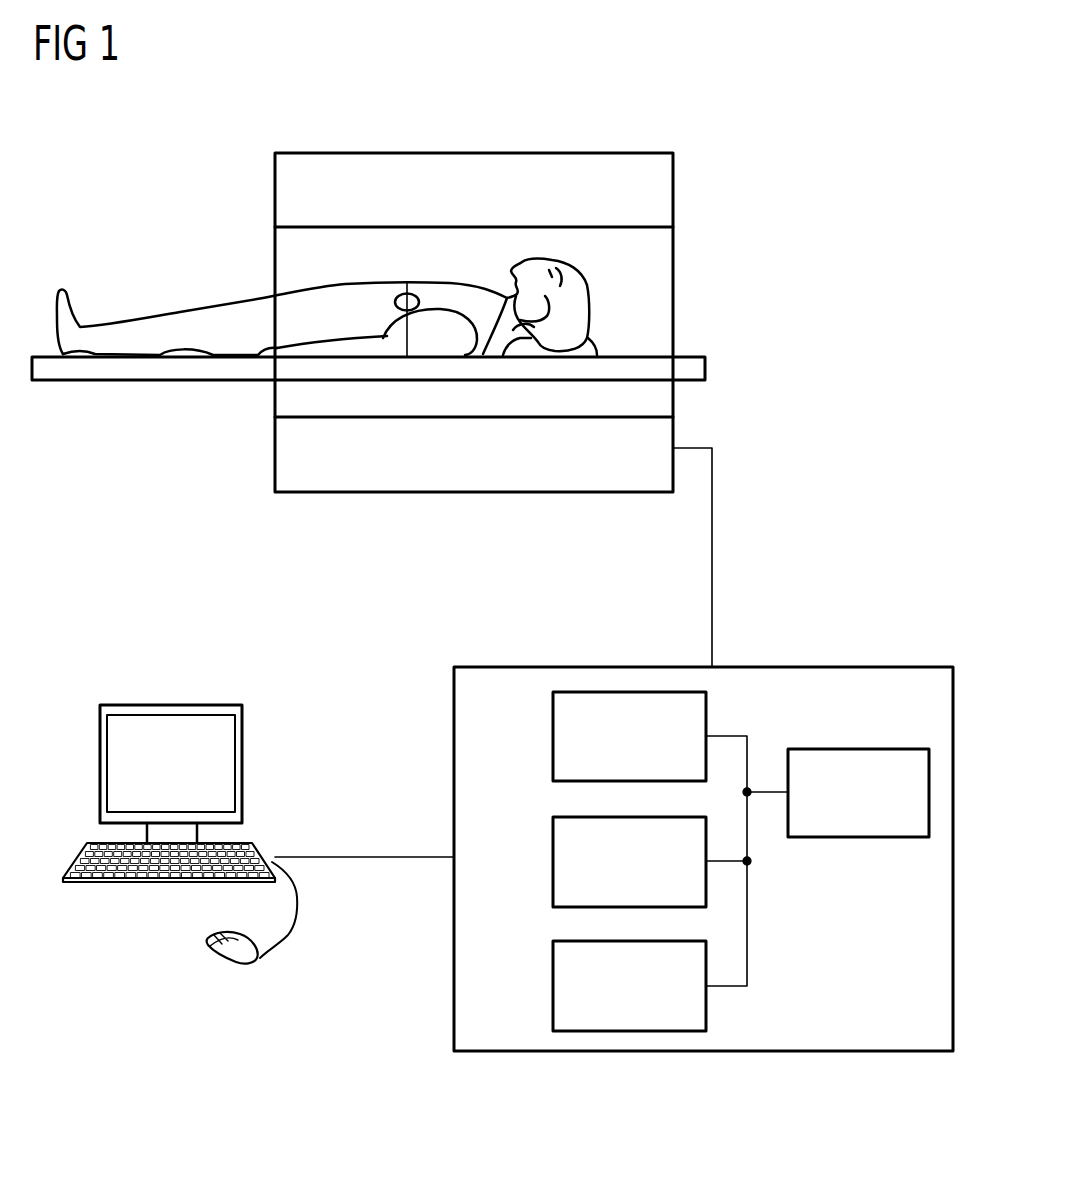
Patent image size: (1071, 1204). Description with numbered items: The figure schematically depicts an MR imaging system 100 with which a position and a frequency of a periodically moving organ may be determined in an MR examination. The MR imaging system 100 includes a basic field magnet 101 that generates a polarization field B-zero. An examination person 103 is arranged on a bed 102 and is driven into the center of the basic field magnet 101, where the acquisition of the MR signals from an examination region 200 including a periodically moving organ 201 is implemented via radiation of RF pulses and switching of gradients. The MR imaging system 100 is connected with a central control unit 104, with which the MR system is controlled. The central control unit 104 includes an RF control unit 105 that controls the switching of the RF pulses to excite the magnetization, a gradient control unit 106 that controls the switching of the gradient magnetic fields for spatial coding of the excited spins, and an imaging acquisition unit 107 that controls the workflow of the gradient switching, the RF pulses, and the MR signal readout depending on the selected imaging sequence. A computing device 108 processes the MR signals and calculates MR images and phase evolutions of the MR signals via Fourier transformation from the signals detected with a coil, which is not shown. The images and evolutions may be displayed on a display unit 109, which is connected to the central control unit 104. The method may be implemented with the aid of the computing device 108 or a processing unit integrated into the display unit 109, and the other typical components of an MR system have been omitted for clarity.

The MR imaging system 100 is at (580, 120).
The basic field magnet 101 is at (673, 190).
The bed 102 is at (110, 372).
The examination person 103 is at (62, 292).
The central control unit 104 is at (831, 667).
The RF control unit 105 is at (553, 736).
The gradient control unit 106 is at (553, 861).
The imaging acquisition unit 107 is at (857, 749).
The computing device 108 is at (553, 986).
The display unit 109 is at (168, 705).
The examination region 200 is at (403, 347).
The periodically moving organ 201 is at (395, 301).